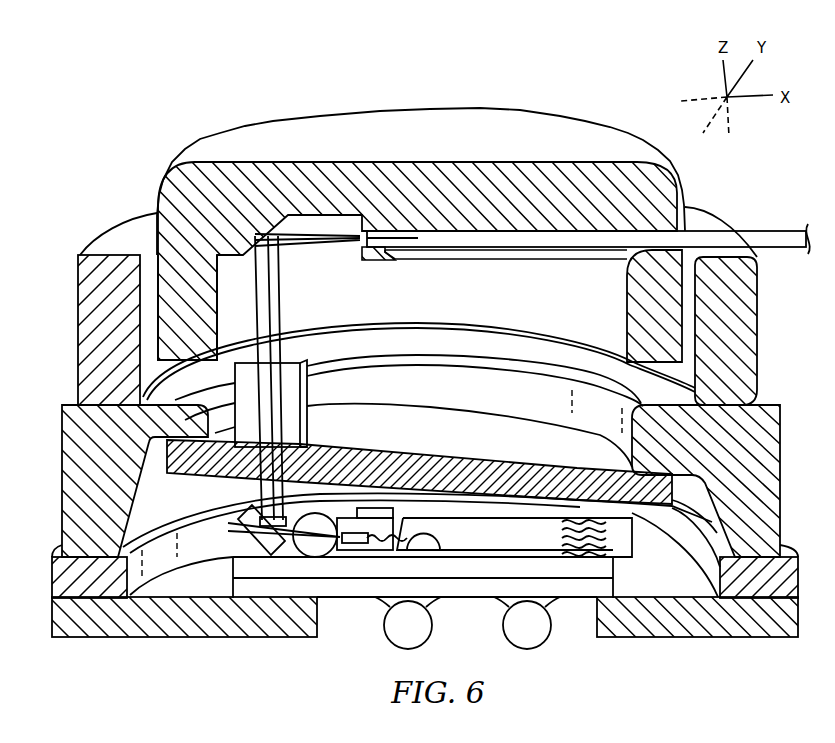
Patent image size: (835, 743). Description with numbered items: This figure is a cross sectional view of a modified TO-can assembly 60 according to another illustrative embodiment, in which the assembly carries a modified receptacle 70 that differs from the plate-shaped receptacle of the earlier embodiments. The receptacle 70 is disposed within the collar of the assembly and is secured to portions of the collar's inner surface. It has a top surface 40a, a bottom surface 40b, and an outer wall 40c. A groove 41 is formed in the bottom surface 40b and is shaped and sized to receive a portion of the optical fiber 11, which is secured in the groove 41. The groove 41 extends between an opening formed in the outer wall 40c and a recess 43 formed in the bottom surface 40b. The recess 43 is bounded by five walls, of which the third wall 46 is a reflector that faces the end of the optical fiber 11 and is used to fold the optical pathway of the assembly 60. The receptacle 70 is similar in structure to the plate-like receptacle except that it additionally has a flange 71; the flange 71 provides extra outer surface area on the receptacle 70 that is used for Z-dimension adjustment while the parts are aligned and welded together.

The modified TO-can assembly 60 is at (116, 138).
The modified receptacle 70 is at (571, 100).
The top surface 40a is at (291, 140).
The bottom surface 40b is at (228, 262).
The outer wall 40c is at (685, 205).
The groove 41 is at (517, 229).
The recess 43 is at (321, 255).
The third wall 46 is at (278, 237).
The optical fiber 11 is at (757, 233).
The flange 71 is at (643, 300).